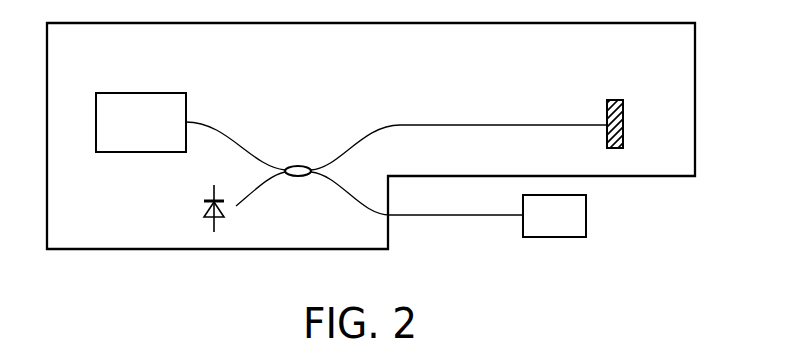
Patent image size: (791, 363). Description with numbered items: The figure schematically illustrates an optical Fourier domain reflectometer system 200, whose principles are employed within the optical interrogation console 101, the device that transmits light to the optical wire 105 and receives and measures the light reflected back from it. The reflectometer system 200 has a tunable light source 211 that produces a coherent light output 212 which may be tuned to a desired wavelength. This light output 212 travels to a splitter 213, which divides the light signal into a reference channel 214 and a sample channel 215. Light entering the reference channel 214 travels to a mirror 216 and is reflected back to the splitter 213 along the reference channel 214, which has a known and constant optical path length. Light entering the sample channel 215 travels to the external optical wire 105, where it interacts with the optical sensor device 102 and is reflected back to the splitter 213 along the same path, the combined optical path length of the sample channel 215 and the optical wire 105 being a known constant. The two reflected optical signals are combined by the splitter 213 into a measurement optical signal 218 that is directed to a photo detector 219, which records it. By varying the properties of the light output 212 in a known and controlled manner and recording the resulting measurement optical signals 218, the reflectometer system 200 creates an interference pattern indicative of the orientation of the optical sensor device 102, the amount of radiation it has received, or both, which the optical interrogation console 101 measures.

The optical interrogation console 101 is at (657, 177).
The optical sensor device 102 is at (554, 216).
The optical wire 105 is at (463, 217).
The optical Fourier domain reflectometer system 200 is at (170, 72).
The tunable light source 211 is at (128, 153).
The coherent light output 212 is at (218, 122).
The splitter 213 is at (296, 166).
The reference channel 214 is at (492, 124).
The sample channel 215 is at (347, 198).
The mirror 216 is at (625, 118).
The measurement optical signal 218 is at (270, 178).
The photo detector 219 is at (225, 213).